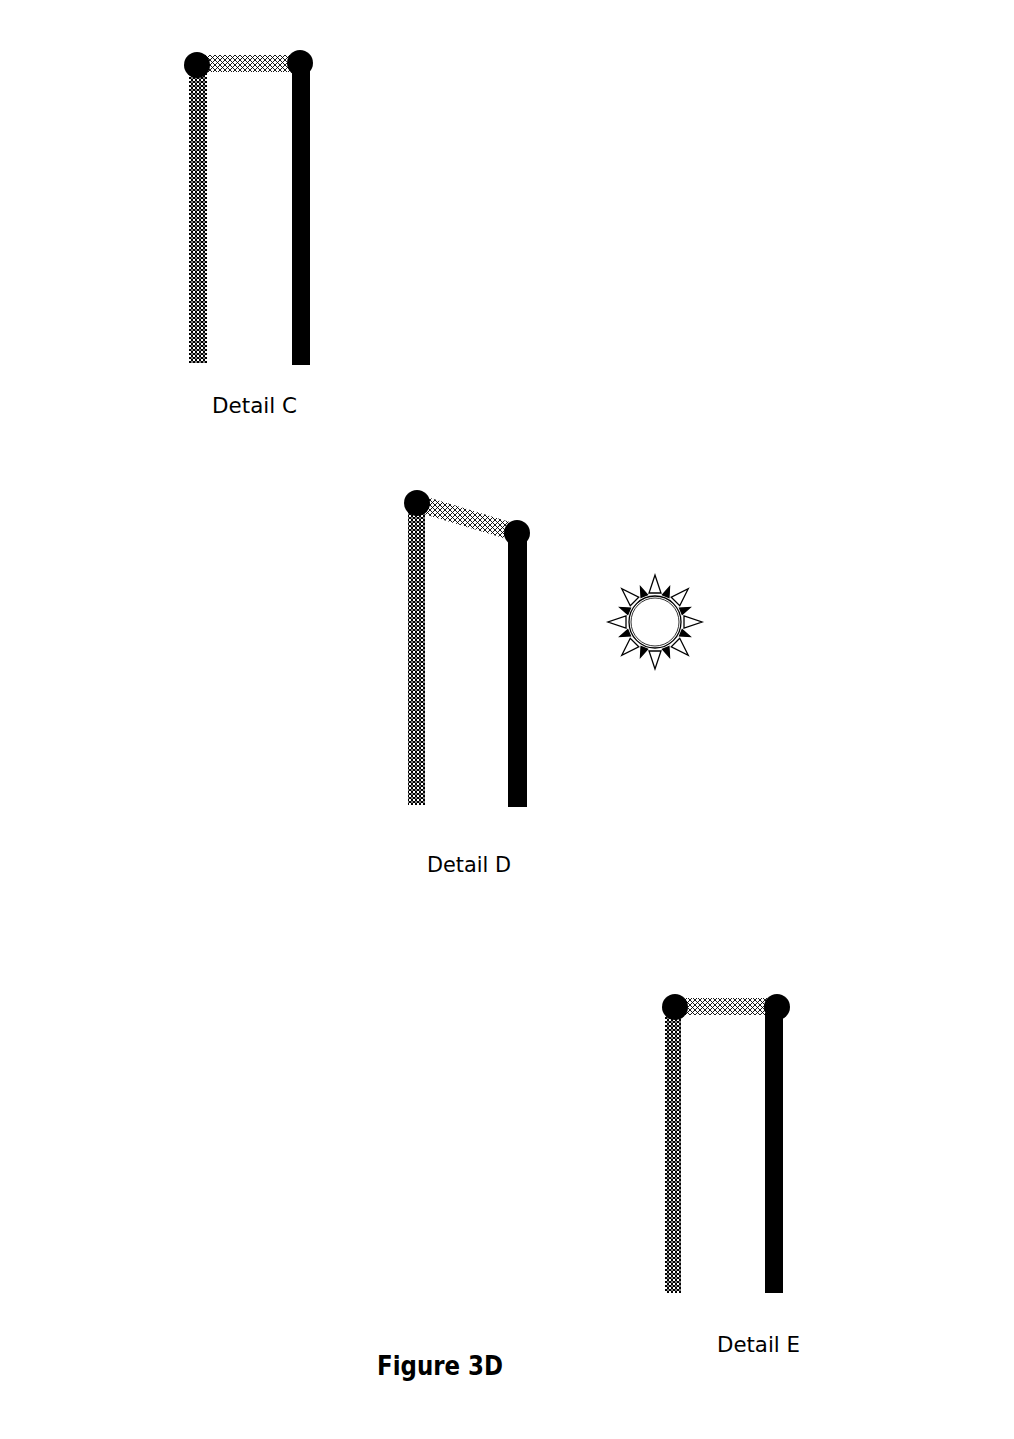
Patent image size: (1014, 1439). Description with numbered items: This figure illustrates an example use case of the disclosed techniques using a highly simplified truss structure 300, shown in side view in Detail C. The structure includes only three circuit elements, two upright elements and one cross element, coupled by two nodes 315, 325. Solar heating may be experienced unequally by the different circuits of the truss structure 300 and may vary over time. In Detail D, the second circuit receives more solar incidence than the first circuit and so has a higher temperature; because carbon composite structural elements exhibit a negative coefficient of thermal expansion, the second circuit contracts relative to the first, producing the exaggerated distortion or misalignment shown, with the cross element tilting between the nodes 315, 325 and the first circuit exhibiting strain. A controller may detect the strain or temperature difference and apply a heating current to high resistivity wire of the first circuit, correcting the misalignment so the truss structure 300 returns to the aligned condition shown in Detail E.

The truss structure 300 is at (150, 48).
The node 315 is at (185, 70).
The node 325 is at (312, 63).